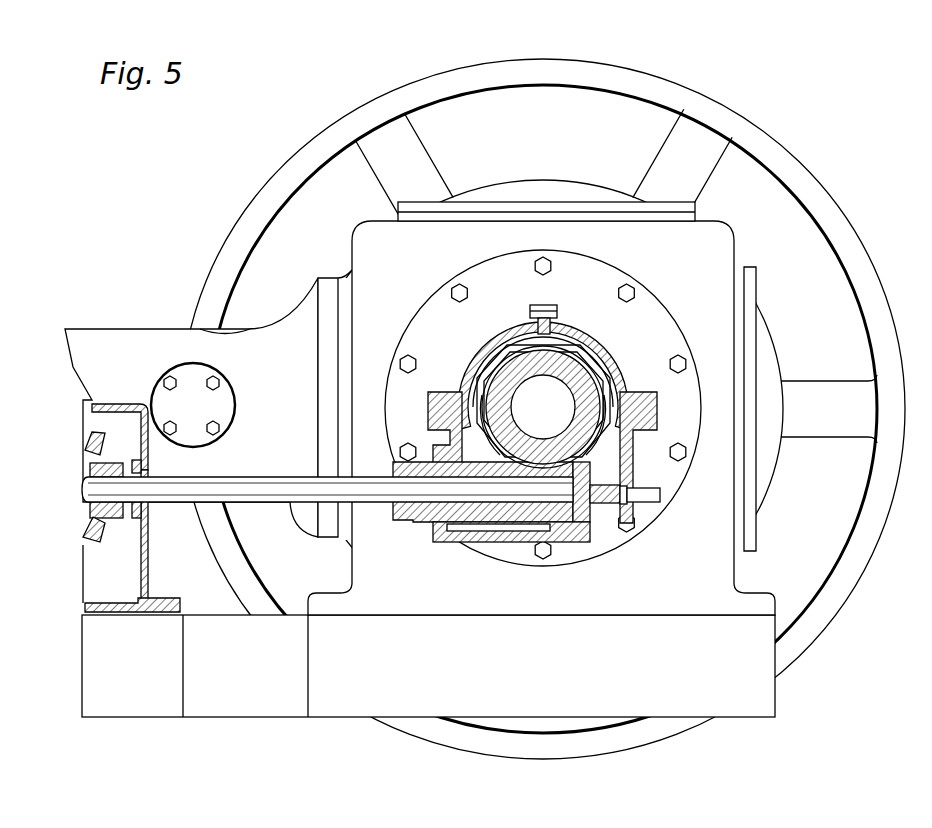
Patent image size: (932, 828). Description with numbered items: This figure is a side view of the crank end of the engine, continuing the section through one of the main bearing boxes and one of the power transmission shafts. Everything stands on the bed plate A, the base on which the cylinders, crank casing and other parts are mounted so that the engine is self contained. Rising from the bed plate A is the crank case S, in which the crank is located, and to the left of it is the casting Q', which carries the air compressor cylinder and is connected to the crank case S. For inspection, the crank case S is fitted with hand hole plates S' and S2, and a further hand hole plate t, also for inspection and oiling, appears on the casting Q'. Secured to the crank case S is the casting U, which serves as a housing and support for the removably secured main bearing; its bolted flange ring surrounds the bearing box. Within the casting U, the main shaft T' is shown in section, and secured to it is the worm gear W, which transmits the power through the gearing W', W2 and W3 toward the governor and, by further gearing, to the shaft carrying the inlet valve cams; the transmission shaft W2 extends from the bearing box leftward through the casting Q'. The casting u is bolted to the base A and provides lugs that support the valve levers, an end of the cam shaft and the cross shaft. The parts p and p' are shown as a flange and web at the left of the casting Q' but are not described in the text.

The crank case S is at (541, 418).
The hand hole plate S' is at (546, 187).
The hand hole plate S2 is at (778, 376).
The casting U is at (655, 313).
The casting u is at (543, 408).
The worm gear W is at (526, 414).
The gearing W' is at (511, 543).
The gearing W2 is at (256, 490).
The gearing W3 is at (88, 474).
The main shaft T' is at (542, 407).
The casting Q' is at (191, 407).
The flange p is at (120, 426).
The web p' is at (131, 541).
The hand hole plate t is at (193, 405).
The bed plate A is at (428, 666).